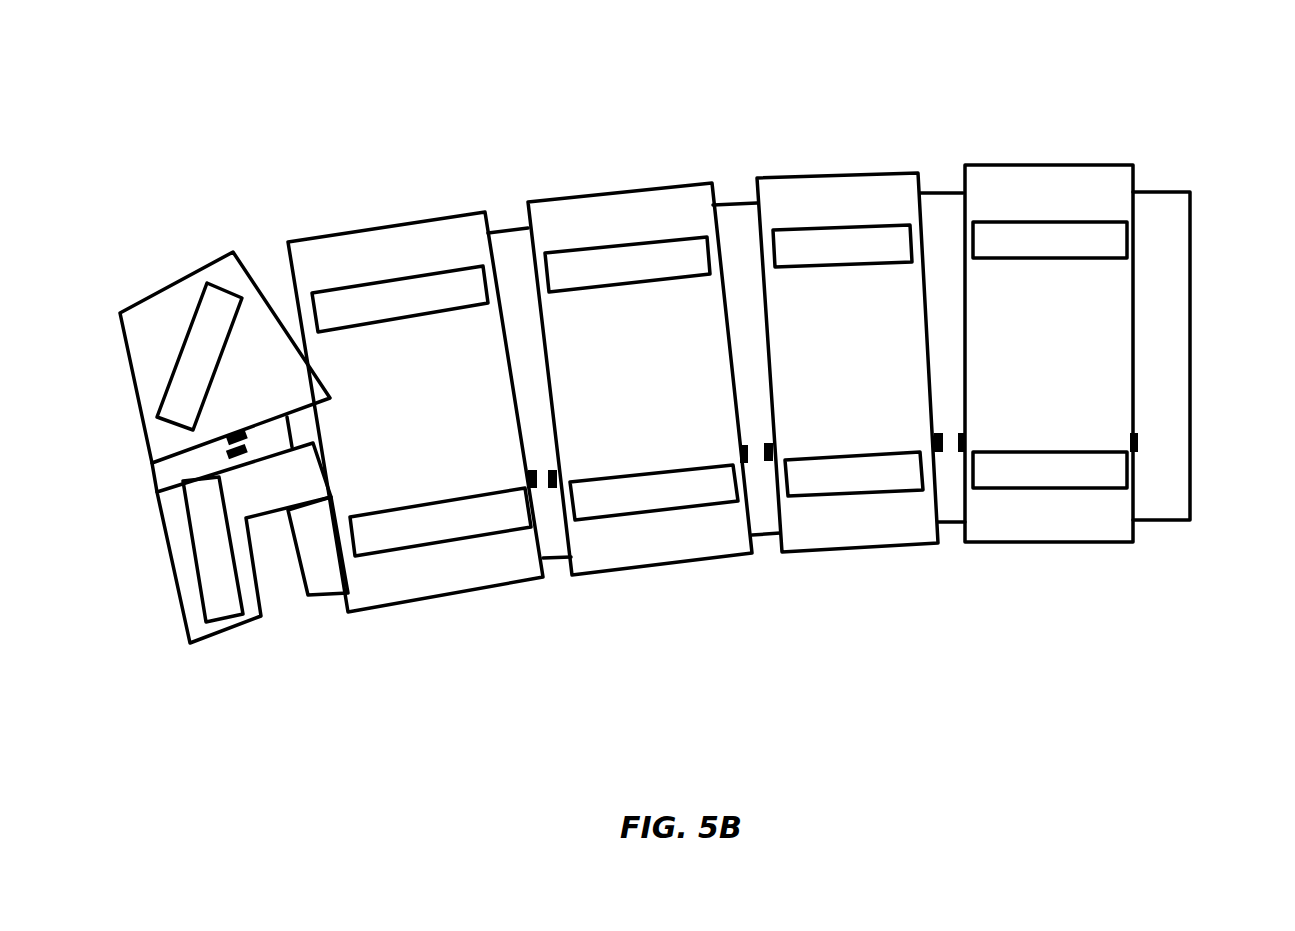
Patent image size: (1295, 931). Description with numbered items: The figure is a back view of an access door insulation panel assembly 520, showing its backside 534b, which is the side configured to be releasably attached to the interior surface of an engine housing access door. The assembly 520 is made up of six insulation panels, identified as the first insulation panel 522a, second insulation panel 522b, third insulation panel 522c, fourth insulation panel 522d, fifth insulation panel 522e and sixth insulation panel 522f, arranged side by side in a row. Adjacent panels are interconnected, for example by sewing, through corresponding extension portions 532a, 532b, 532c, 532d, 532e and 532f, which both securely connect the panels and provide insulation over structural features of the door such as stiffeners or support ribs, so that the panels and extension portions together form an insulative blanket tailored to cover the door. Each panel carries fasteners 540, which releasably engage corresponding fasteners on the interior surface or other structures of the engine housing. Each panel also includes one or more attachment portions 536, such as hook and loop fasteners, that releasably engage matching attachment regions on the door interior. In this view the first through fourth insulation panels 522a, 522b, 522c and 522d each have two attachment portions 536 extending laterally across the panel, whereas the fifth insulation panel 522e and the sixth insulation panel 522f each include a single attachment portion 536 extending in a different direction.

The access door insulation panel assembly 520 is at (265, 160).
The first insulation panel 522a is at (1072, 190).
The second insulation panel 522b is at (848, 203).
The third insulation panel 522c is at (670, 208).
The fourth insulation panel 522d is at (433, 243).
The fifth insulation panel 522e is at (165, 318).
The sixth insulation panel 522f is at (247, 605).
The first extension portion 532a is at (1167, 505).
The second extension portion 532b is at (952, 515).
The third extension portion 532c is at (762, 520).
The fourth extension portion 532d is at (555, 545).
The fifth extension portion 532e is at (324, 582).
The sixth extension portion 532f is at (177, 465).
The backside 534b is at (650, 353).
The attachment portion 536 is at (358, 307).
The fastener 540 is at (523, 490).